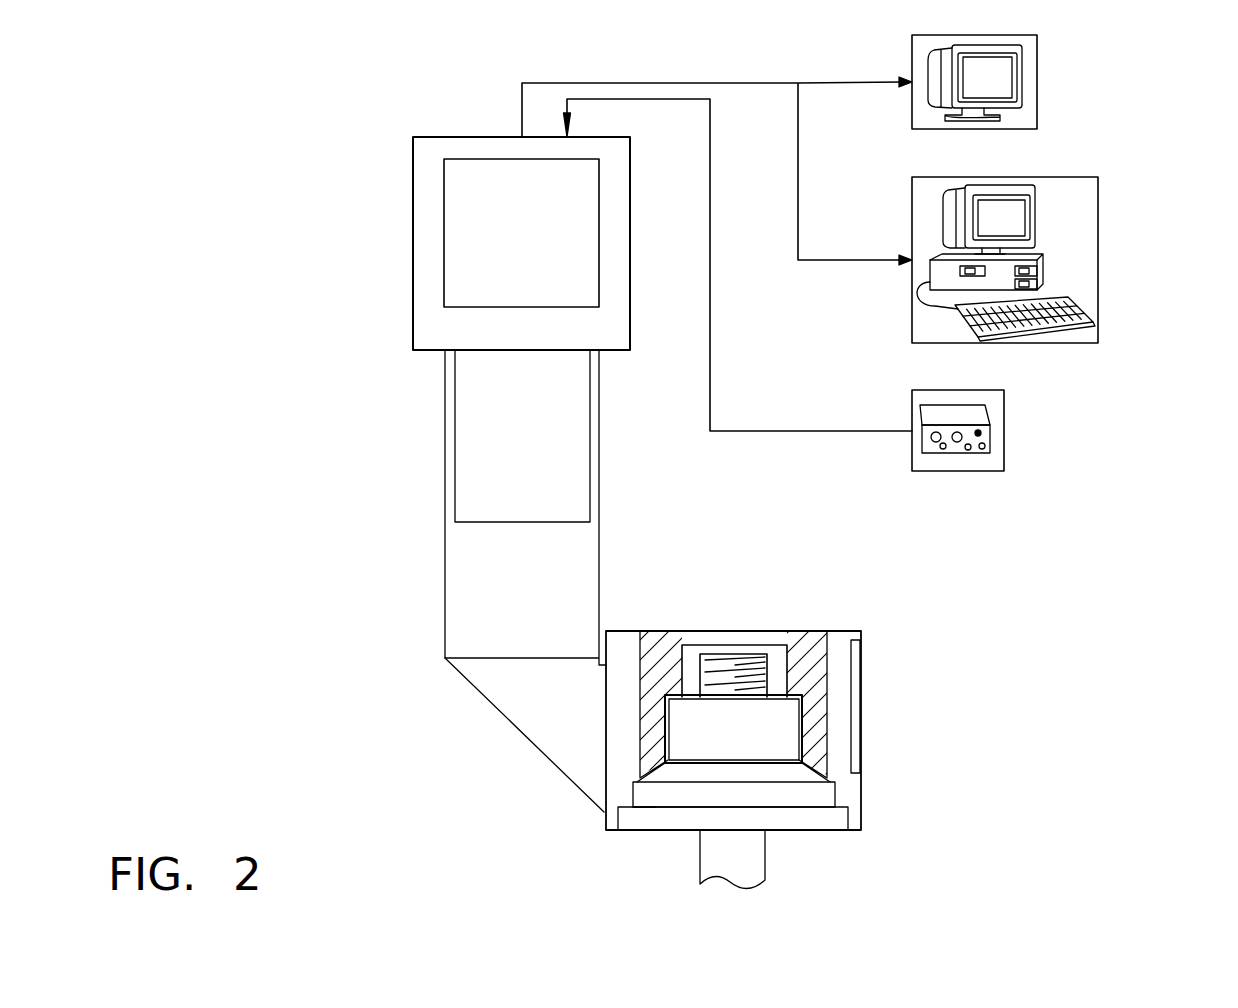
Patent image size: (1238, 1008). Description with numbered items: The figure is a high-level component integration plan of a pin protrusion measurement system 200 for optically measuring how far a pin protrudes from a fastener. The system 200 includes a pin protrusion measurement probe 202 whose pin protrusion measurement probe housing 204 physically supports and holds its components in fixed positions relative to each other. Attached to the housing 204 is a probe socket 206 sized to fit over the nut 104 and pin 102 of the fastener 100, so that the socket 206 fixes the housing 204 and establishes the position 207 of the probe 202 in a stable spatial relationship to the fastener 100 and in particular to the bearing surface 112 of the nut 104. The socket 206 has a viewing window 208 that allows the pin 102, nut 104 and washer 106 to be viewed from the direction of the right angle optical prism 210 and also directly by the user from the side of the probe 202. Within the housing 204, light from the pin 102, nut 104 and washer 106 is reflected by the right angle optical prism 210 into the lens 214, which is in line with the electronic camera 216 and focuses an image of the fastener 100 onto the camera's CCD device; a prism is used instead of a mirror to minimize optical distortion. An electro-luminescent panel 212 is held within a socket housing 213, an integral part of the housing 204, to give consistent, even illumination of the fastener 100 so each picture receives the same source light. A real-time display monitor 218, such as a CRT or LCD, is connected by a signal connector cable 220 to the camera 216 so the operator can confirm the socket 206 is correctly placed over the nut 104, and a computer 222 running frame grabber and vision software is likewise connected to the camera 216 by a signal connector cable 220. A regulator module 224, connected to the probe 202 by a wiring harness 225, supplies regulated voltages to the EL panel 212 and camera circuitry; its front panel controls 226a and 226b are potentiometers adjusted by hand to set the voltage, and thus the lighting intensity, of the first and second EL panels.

The fastener 100 is at (662, 868).
The pin 102 is at (752, 872).
The nut 104 is at (824, 796).
The washer 106 is at (838, 820).
The bearing surface 112 is at (645, 808).
The pin protrusion measurement system 200 is at (1128, 576).
The pin protrusion measurement probe 202 is at (310, 553).
The pin protrusion measurement probe housing 204 is at (437, 524).
The probe socket 206 is at (748, 637).
The position 207 is at (820, 762).
The viewing window 208 is at (627, 652).
The right angle optical prism 210 is at (518, 715).
The electro-luminescent panel 212 is at (858, 672).
The socket housing 213 is at (846, 618).
The lens 214 is at (478, 438).
The electronic camera 216 is at (406, 236).
The real-time display monitor 218 is at (1040, 82).
The signal connector cable 220 is at (665, 82).
The computer 222 is at (1100, 243).
The regulator module 224 is at (1006, 426).
The wiring harness 225 is at (712, 385).
The control 226a is at (936, 446).
The control 226b is at (957, 446).